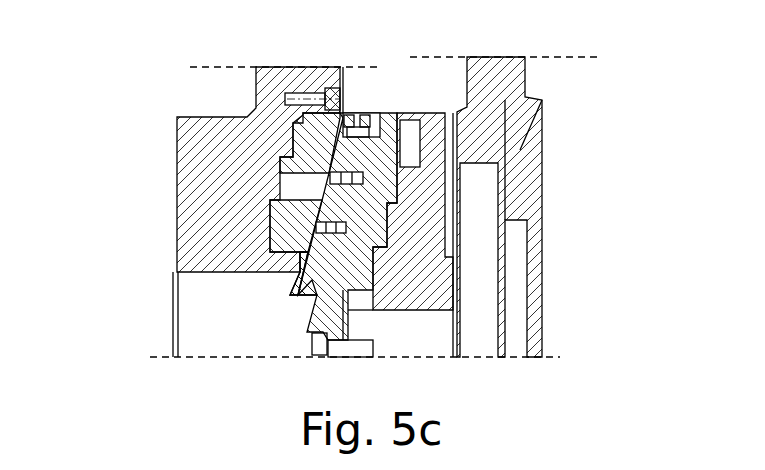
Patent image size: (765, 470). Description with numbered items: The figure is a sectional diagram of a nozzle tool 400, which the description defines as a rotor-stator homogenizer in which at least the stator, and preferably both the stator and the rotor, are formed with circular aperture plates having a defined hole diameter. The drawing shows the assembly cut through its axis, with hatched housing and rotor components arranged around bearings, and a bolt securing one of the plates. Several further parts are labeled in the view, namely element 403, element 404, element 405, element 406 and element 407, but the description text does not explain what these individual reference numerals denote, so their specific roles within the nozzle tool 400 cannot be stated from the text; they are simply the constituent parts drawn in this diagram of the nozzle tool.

The nozzle tool 400 is at (375, 180).
The output flange 403 is at (295, 284).
The bearing ring 404 is at (295, 272).
The fastening bolt 405 is at (305, 80).
The bearing 406 is at (380, 124).
The seal ring 407 is at (332, 178).